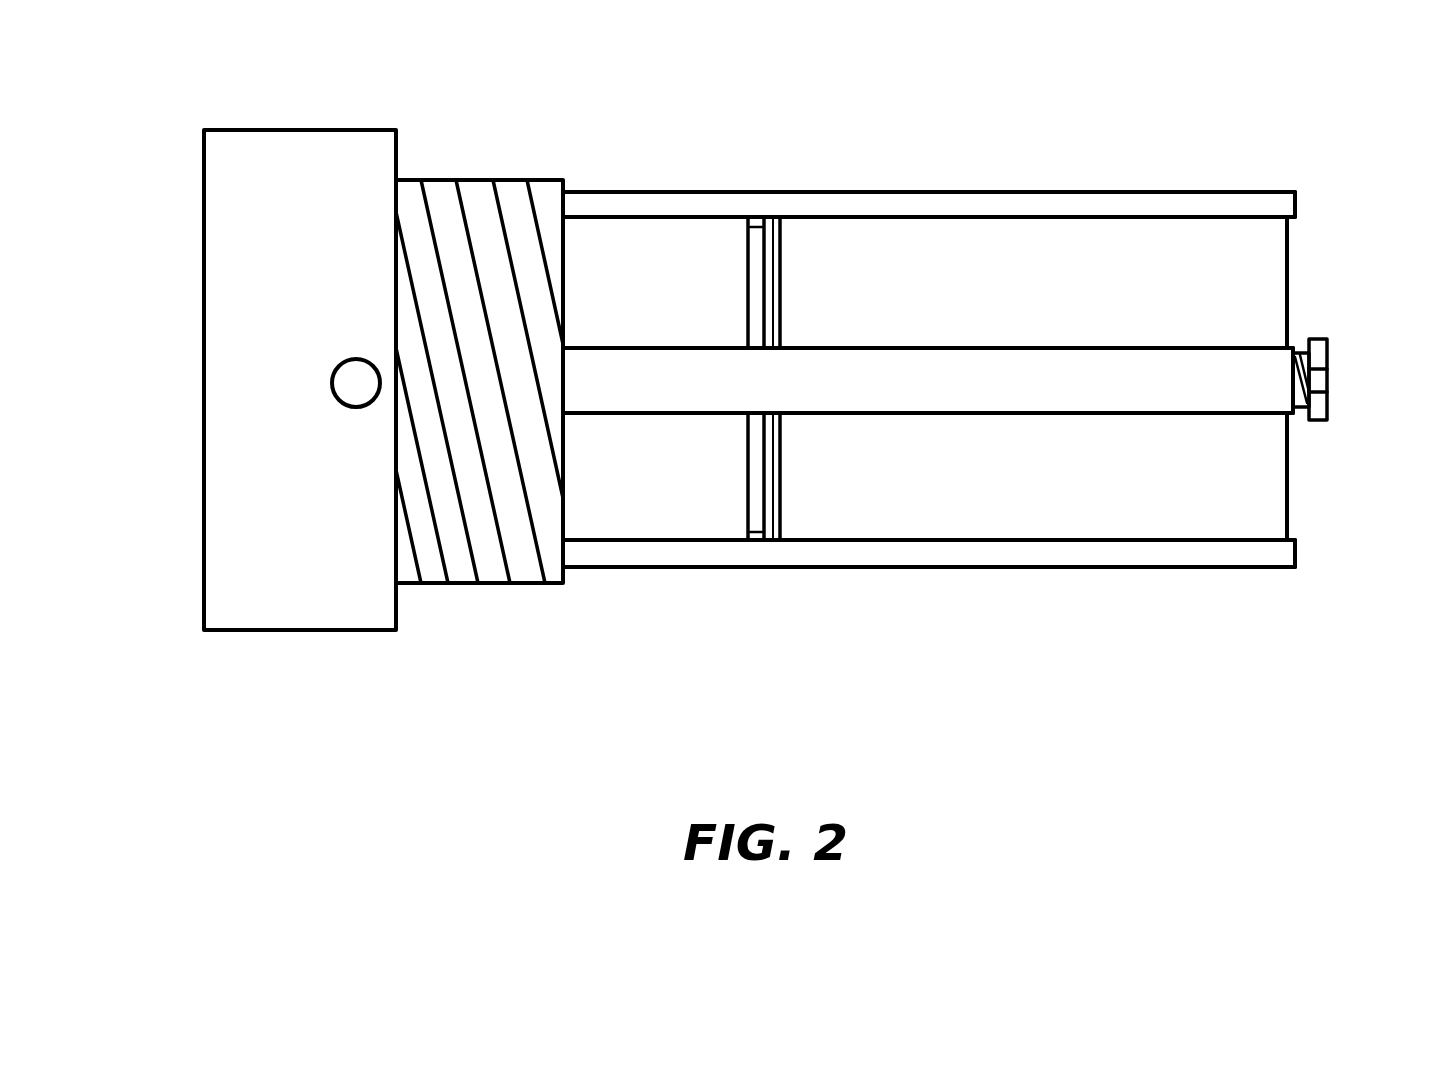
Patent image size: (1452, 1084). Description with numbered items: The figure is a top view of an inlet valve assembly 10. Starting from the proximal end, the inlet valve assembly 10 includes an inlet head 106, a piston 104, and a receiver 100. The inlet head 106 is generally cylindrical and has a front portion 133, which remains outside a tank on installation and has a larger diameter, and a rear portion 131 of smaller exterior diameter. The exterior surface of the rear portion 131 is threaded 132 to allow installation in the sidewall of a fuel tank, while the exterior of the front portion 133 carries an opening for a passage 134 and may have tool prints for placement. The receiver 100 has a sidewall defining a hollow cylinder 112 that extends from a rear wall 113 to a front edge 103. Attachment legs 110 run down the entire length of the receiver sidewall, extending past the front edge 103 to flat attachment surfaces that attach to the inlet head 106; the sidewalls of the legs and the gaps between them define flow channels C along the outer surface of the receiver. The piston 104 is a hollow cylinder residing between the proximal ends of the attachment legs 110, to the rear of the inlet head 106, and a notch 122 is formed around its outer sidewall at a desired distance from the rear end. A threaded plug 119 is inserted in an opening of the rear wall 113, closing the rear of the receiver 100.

The inlet valve assembly 10 is at (1200, 641).
The receiver 100 is at (1270, 272).
The front edge 103 is at (767, 532).
The piston 104 is at (640, 252).
The inlet head 106 is at (223, 588).
The attachment leg 110 is at (1070, 360).
The hollow cylinder 112 is at (988, 508).
The rear wall 113 is at (1287, 509).
The threaded plug 119 is at (1327, 373).
The notch 122 is at (758, 228).
The rear portion 131 is at (565, 105).
The threads 132 is at (500, 553).
The front portion 133 is at (395, 105).
The passage 134 is at (356, 397).
The flow channels C is at (1298, 470).